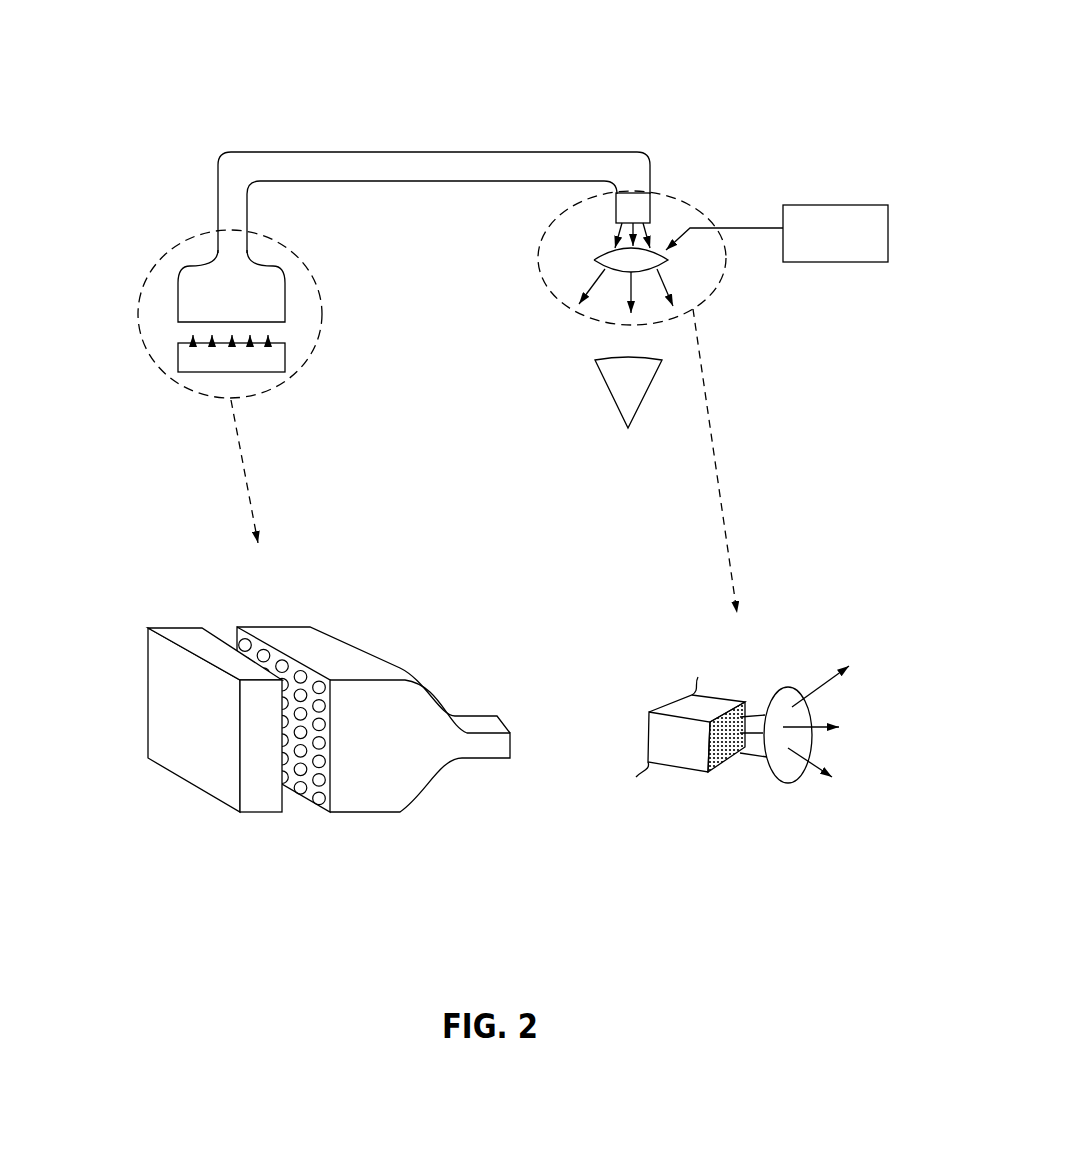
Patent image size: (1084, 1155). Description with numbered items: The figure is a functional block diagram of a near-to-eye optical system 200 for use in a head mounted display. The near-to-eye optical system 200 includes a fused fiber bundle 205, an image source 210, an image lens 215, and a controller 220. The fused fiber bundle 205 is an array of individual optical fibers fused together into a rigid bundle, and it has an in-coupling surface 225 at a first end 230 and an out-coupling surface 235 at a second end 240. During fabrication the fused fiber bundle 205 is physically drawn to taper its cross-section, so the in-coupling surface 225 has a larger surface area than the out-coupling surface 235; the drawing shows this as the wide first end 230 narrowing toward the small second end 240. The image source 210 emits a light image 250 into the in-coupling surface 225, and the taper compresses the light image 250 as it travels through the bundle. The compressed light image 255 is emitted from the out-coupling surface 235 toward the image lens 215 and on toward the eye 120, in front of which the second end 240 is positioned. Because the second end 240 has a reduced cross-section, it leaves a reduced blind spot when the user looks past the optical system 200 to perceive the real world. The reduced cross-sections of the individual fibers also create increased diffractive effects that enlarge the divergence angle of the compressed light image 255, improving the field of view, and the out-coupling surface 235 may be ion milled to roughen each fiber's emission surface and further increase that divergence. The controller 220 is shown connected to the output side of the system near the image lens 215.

The near-to-eye optical system 200 is at (735, 58).
The fused fiber bundle 205 is at (538, 175).
The image source 210 is at (246, 367).
The image lens 215 is at (647, 270).
The controller 220 is at (851, 252).
The in-coupling surface 225 is at (297, 808).
The first end 230 is at (246, 311).
The out-coupling surface 235 is at (733, 771).
The second end 240 is at (649, 217).
The light image 250 is at (185, 333).
The compressed light image 255 is at (610, 233).
The eye 120 is at (642, 388).